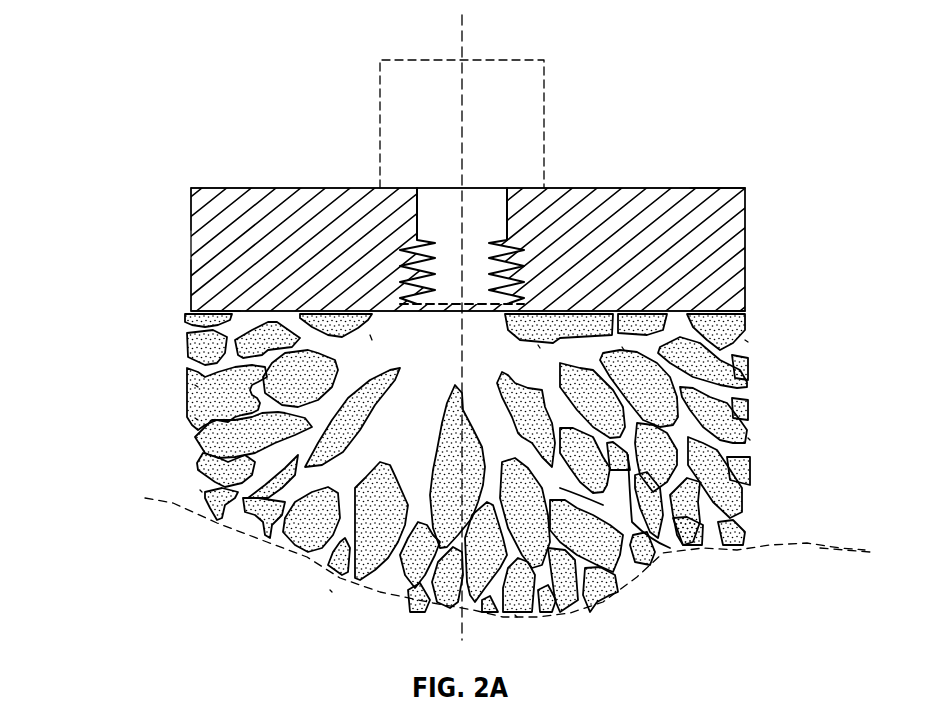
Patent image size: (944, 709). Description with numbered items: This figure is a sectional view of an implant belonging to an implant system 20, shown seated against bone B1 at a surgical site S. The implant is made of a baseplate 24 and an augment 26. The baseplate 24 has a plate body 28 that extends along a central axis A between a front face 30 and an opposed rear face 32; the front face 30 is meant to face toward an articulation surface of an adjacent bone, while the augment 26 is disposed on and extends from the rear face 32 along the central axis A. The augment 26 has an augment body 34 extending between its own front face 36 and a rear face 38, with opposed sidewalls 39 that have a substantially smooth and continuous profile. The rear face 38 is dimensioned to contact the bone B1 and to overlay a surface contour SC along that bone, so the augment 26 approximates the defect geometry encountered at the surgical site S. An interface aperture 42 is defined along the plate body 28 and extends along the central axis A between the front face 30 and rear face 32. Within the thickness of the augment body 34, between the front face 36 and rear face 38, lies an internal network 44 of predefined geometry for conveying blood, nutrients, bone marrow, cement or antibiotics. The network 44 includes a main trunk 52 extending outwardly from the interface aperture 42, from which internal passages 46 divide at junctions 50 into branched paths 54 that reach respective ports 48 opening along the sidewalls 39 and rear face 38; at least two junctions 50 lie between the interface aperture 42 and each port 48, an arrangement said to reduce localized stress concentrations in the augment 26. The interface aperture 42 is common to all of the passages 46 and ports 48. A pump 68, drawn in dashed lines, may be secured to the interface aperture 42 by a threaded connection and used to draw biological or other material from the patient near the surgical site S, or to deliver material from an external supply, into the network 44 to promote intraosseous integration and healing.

The implant system 20 is at (160, 100).
The baseplate 24 is at (218, 188).
The augment 26 is at (178, 340).
The plate body 28 is at (205, 210).
The front face 30 is at (705, 188).
The rear face 32 is at (745, 340).
The augment body 34 is at (195, 385).
The front face 36 is at (745, 305).
The rear face 38 is at (515, 615).
The sidewalls 39 is at (195, 418).
The interface aperture 42 is at (505, 200).
The internal network 44 is at (213, 305).
The internal passages 46 is at (370, 335).
The ports 48 is at (200, 490).
The junction 50 is at (330, 590).
The main trunk 52 is at (430, 325).
The branched paths 54 is at (538, 345).
The pump 68 is at (505, 58).
The central axis A is at (462, 30).
The surgical site S is at (740, 100).
The surface contour SC is at (800, 540).
The bone B1 is at (822, 578).